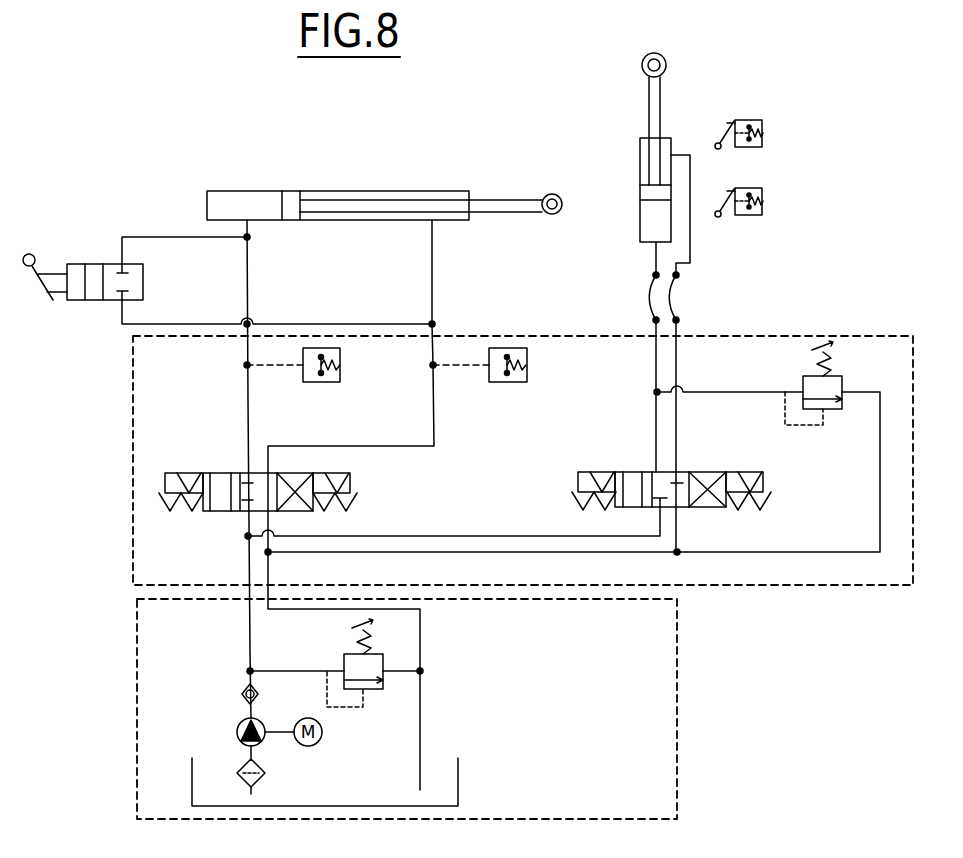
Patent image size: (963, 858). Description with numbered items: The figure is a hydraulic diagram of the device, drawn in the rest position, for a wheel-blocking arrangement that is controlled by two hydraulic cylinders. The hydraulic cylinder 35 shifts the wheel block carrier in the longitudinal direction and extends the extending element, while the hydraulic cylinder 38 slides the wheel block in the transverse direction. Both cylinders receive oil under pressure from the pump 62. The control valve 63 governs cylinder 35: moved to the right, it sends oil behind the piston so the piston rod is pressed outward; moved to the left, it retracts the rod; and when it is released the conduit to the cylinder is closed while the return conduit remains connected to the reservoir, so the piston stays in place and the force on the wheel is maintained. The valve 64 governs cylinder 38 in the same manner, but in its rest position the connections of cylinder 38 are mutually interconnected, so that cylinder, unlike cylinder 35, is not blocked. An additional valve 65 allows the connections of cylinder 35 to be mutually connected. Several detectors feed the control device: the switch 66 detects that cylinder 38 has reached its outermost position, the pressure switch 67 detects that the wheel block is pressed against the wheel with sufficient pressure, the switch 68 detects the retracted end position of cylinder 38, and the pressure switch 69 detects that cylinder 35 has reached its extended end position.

The hydraulic cylinder 35 is at (282, 191).
The hydraulic cylinder 38 is at (640, 180).
The pump 62 is at (237, 735).
The control valve 63 is at (227, 473).
The valve 64 is at (634, 472).
The additional valve 65 is at (100, 264).
The switch 66 is at (762, 145).
The pressure switch 67 is at (340, 373).
The switch 68 is at (753, 215).
The pressure switch 69 is at (527, 373).